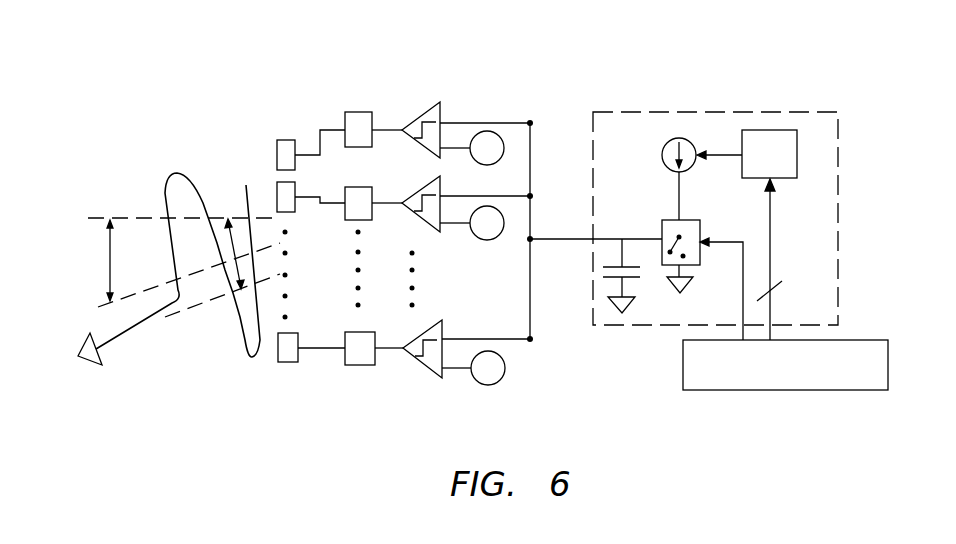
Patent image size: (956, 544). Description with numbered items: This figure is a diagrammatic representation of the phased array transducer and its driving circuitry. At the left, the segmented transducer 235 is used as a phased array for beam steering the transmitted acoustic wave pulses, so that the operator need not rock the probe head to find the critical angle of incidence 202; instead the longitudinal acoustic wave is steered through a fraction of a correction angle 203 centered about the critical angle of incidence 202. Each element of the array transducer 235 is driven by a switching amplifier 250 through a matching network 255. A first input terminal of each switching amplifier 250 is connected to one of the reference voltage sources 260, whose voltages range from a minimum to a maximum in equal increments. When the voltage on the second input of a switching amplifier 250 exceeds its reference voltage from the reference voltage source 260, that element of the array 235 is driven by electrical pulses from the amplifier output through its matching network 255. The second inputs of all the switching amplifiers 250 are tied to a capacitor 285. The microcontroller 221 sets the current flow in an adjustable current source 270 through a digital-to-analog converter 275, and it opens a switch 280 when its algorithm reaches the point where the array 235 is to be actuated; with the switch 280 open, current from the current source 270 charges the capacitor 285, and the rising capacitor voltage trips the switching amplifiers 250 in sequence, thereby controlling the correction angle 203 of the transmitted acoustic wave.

The critical angle of incidence 202 is at (127, 244).
The correction angle 203 is at (201, 270).
The microcontroller 221 is at (778, 391).
The segmented transducer 235 is at (276, 188).
The switching amplifiers 250 is at (418, 188).
The matching networks 255 is at (345, 188).
The reference voltage sources 260 is at (487, 131).
The adjustable current source 270 is at (675, 137).
The digital-to-analog converter 275 is at (777, 130).
The switch 280 is at (670, 223).
The capacitor 285 is at (607, 262).